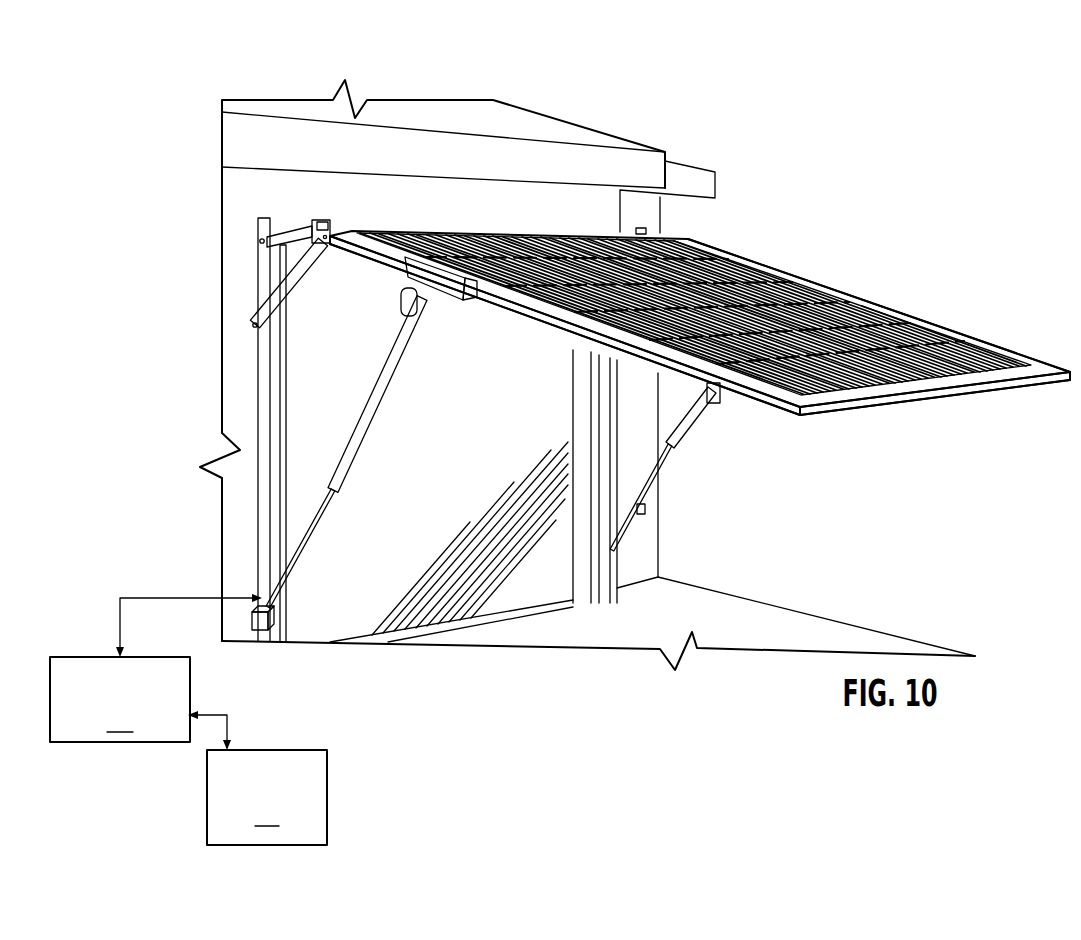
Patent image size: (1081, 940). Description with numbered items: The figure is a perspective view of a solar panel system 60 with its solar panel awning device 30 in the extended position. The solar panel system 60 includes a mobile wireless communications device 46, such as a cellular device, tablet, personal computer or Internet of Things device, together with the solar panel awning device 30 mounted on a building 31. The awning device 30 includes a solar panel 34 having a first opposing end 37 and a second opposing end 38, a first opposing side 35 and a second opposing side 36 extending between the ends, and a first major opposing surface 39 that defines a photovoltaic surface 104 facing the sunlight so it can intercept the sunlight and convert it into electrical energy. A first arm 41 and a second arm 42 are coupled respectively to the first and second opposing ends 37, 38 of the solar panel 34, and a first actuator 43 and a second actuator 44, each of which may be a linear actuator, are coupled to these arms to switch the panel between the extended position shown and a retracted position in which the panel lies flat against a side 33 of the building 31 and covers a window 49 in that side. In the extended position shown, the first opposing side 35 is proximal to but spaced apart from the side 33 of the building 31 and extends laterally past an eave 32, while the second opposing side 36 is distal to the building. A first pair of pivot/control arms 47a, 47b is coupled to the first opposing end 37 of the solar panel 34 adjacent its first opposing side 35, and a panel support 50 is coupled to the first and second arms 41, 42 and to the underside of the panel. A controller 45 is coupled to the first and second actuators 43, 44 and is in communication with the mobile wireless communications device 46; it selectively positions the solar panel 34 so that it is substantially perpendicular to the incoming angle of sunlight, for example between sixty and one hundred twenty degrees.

The solar panel awning device 30 is at (893, 248).
The building 31 is at (485, 98).
The eave 32 is at (695, 204).
The side of the building 33 is at (558, 177).
The solar panel 34 is at (700, 327).
The first opposing side 35 is at (520, 233).
The second opposing side 36 is at (977, 393).
The first opposing end 37 is at (775, 400).
The second opposing end 38 is at (990, 346).
The first major opposing surface 39 is at (790, 310).
The first arm 41 is at (357, 450).
The second arm 42 is at (686, 440).
The first actuator 43 is at (303, 578).
The second actuator 44 is at (640, 507).
The controller 45 is at (156, 668).
The mobile wireless communications device 46 is at (257, 778).
The pivot/control arm 47a is at (300, 225).
The pivot/control arm 47b is at (284, 278).
The window 49 is at (497, 582).
The panel support 50 is at (577, 473).
The solar panel system 60 is at (891, 108).
The photovoltaic surface 104 is at (694, 310).